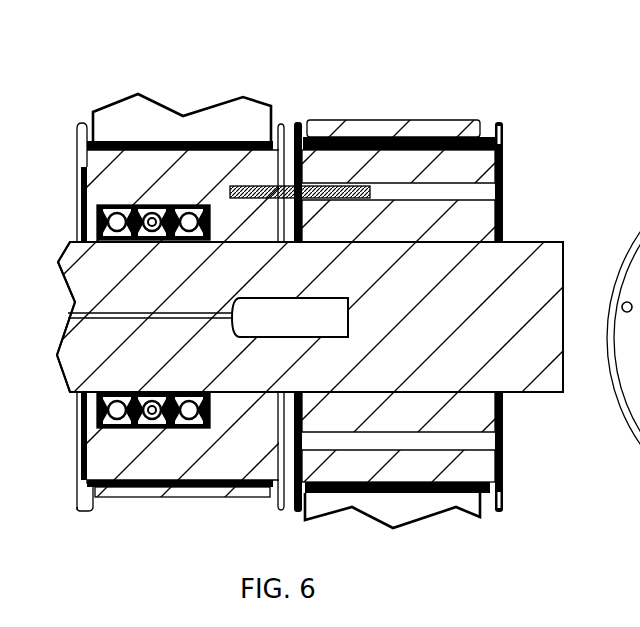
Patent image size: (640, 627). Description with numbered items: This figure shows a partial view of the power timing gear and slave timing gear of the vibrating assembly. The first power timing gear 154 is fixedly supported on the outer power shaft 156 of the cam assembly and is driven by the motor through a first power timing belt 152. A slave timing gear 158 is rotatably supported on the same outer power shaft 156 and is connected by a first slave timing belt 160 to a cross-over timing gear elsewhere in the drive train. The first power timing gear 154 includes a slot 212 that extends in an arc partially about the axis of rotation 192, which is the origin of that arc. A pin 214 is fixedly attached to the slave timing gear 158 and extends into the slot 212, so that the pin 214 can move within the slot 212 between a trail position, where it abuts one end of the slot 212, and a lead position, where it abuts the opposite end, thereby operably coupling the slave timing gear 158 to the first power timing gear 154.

The first power timing belt 152 is at (481, 515).
The first power timing gear 154 is at (503, 128).
The outer power shaft 156 is at (516, 241).
The slave timing gear 158 is at (78, 126).
The first slave timing belt 160 is at (153, 100).
The axis of rotation 192 is at (639, 376).
The slot 212 is at (508, 197).
The pin 214 is at (238, 186).